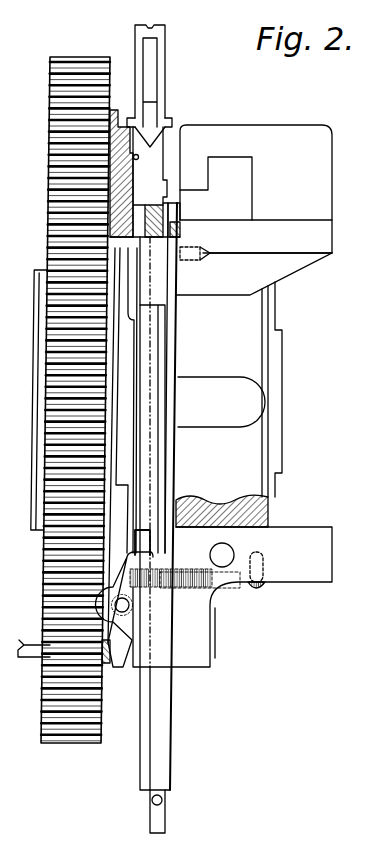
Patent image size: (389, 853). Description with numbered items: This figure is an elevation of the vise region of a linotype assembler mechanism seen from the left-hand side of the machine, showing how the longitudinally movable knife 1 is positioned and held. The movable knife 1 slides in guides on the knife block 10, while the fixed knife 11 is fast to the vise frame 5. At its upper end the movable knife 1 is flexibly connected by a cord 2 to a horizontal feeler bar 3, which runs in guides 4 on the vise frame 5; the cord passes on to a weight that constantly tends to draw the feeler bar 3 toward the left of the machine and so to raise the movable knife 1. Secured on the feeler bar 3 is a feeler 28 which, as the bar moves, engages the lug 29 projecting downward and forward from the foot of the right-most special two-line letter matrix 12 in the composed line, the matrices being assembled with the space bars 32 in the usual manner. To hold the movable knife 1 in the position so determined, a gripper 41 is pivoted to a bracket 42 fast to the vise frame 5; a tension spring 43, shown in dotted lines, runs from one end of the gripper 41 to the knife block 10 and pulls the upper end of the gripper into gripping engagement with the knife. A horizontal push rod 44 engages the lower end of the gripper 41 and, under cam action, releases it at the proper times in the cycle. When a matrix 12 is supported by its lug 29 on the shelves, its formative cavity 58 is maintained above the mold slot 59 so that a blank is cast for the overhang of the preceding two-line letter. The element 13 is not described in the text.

The movable knife 1 is at (147, 718).
The cord 2 is at (174, 451).
The feeler bar 3 is at (173, 232).
The guides 4 is at (178, 260).
The vise frame 5 is at (250, 484).
The knife block 10 is at (313, 577).
The fixed knife 11 is at (153, 346).
The 2-line letter matrix 12 is at (148, 145).
The pivot end 13 is at (163, 817).
The feeler 28 is at (172, 192).
The lug 29 is at (165, 202).
The space bars 32 is at (158, 86).
The gripper 41 is at (150, 555).
The bracket 42 is at (133, 595).
The tension spring 43 is at (238, 586).
The push rod 44 is at (26, 648).
The formative cavity 58 is at (139, 157).
The mold slot 59 is at (77, 182).